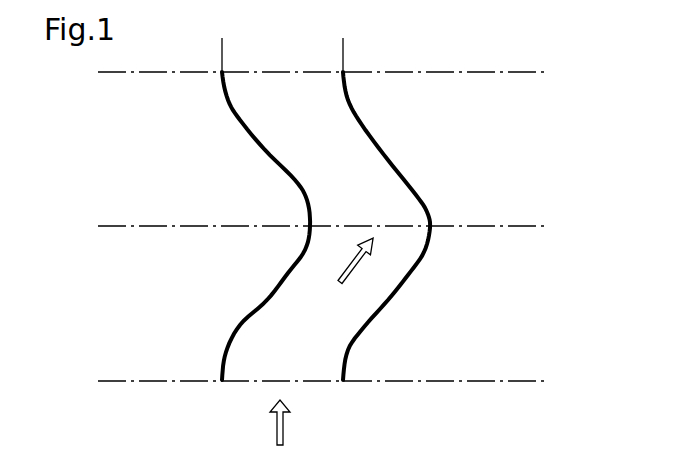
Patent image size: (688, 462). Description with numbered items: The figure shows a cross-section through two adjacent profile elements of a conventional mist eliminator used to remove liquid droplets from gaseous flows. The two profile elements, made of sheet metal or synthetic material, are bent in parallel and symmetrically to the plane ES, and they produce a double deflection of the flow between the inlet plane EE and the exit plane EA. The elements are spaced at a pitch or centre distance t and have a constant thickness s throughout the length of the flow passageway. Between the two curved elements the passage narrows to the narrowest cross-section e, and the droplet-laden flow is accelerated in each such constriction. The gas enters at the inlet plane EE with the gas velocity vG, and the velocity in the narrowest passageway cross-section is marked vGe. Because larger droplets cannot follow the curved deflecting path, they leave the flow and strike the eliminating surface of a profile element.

The exit plane EA is at (336, 79).
The plane of symmetry ES is at (336, 233).
The inlet plane EE is at (335, 387).
The pitch t is at (343, 44).
The maximum profile element thickness s is at (255, 372).
The narrowest passageway cross-section e is at (295, 269).
The gas velocity vG is at (288, 422).
The gas velocity in passage vGe is at (371, 260).